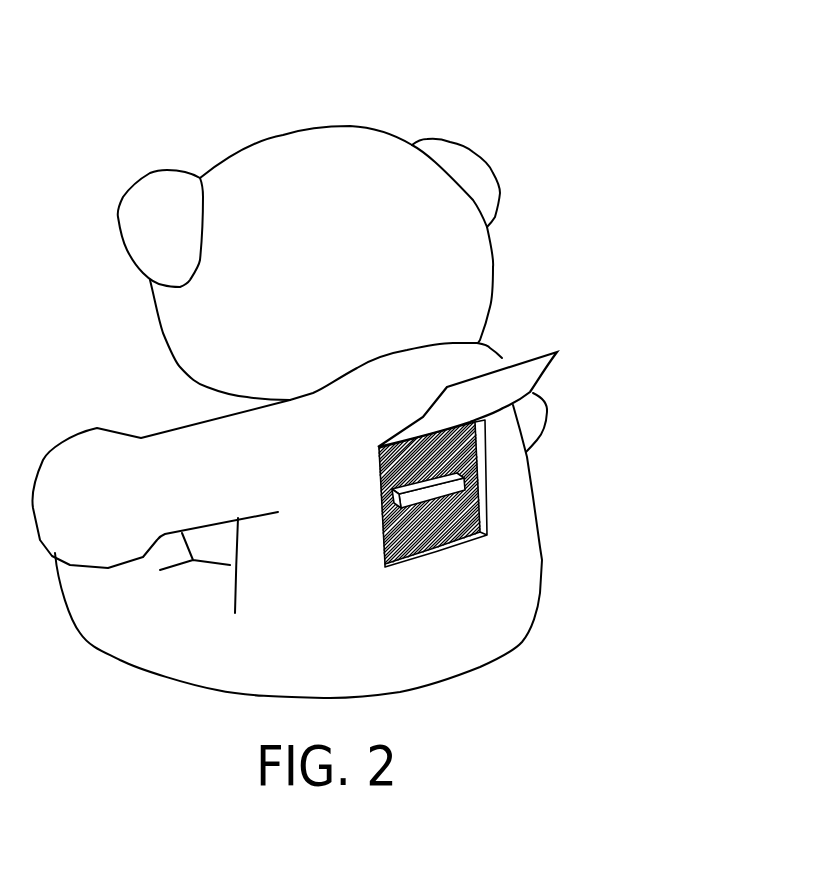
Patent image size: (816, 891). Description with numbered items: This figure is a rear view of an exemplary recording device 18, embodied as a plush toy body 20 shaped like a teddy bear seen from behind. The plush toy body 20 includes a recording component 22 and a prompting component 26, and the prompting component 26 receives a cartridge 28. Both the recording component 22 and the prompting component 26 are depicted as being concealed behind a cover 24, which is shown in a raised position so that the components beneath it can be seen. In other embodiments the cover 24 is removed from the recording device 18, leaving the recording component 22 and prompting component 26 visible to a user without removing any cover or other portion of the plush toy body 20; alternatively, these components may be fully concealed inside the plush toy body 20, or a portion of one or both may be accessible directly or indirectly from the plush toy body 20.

The recording device 18 is at (637, 134).
The plush toy body 20 is at (468, 147).
The recording component 22 is at (425, 547).
The cover 24 is at (423, 416).
The prompting component 26 is at (453, 460).
The cartridge 28 is at (389, 501).